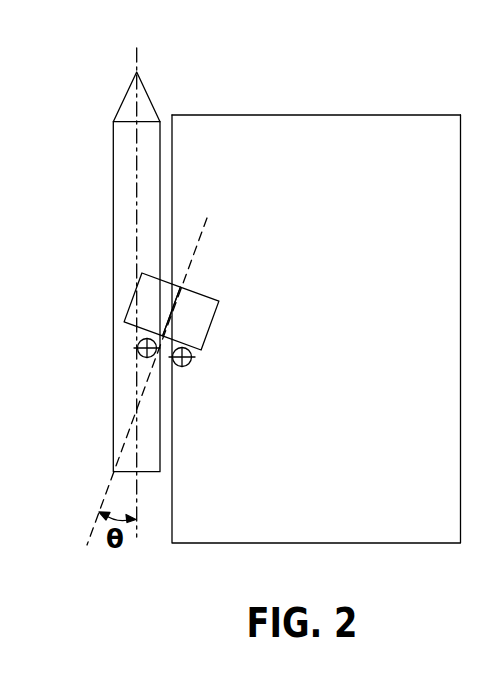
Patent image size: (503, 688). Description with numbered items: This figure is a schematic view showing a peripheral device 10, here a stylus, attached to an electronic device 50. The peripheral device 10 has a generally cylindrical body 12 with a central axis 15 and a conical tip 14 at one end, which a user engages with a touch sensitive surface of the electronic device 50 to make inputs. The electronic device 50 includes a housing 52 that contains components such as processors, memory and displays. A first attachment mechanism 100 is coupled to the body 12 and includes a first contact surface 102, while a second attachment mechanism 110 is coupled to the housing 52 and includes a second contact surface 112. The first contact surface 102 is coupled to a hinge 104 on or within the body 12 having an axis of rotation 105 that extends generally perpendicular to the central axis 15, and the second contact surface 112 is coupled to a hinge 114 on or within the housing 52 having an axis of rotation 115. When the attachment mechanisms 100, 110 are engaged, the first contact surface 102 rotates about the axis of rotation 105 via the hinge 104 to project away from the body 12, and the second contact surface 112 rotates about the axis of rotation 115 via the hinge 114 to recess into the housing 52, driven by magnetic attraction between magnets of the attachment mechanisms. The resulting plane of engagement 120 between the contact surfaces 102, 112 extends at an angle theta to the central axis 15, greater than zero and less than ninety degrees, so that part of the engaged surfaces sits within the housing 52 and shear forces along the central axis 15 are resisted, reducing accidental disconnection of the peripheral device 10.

The peripheral device 10 is at (90, 243).
The body 12 is at (113, 143).
The conical tip 14 is at (125, 100).
The central axis 15 is at (137, 196).
The electronic device 50 is at (309, 101).
The housing 52 is at (395, 115).
The first attachment mechanism 100 is at (169, 264).
The first contact surface 102 is at (208, 317).
The hinge 104 is at (137, 342).
The axis of rotation 105 is at (142, 353).
The second attachment mechanism 110 is at (245, 294).
The second contact surface 112 is at (140, 303).
The hinge 114 is at (190, 362).
The axis of rotation 115 is at (190, 367).
The plane of engagement 120 is at (195, 248).